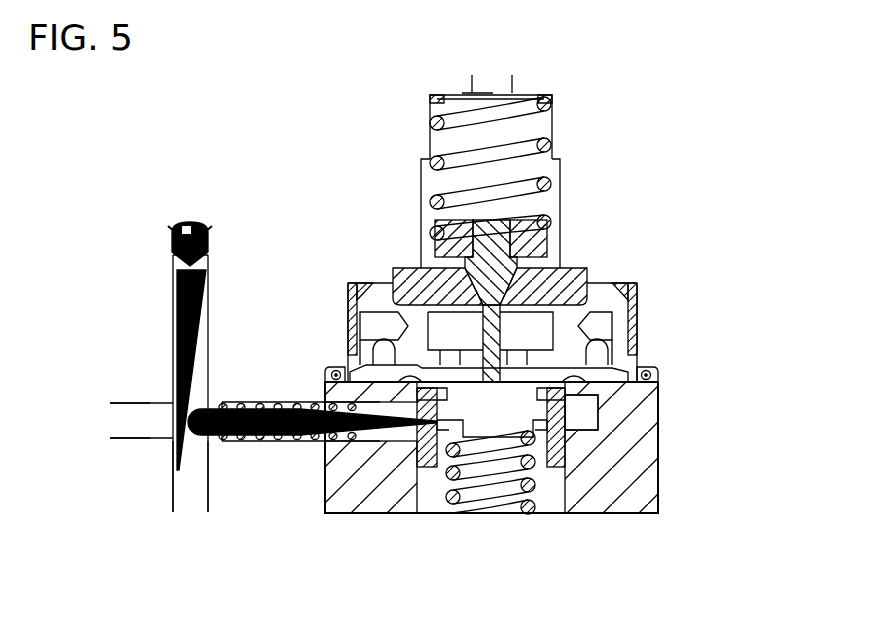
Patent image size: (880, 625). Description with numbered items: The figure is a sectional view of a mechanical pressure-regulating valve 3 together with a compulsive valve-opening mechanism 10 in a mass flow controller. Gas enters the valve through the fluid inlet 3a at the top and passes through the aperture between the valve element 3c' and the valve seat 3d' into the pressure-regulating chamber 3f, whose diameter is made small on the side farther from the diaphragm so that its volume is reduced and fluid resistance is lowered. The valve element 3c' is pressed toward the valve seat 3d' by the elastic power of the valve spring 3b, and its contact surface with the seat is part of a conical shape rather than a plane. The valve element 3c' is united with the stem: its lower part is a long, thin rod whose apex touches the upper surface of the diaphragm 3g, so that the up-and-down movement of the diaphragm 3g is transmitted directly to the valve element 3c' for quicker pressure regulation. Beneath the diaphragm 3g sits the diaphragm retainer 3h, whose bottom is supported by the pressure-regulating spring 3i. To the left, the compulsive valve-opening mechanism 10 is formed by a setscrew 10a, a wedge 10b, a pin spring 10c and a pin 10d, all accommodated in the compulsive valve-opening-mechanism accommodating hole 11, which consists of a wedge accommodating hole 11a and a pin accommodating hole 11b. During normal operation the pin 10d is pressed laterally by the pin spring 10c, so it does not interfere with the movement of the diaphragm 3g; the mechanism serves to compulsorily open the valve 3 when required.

The mechanical pressure-regulating valve 3 is at (628, 199).
The fluid inlet 3a is at (493, 92).
The valve spring 3b is at (517, 151).
The valve element 3c' is at (433, 301).
The valve seat 3d' is at (550, 274).
The pressure-regulating chamber 3f is at (533, 335).
The diaphragm 3g is at (562, 392).
The diaphragm retainer 3h is at (535, 405).
The pressure-regulating spring 3i is at (522, 490).
The compulsive valve-opening mechanism 10 is at (320, 172).
The setscrew 10a is at (185, 232).
The wedge 10b is at (173, 296).
The pin spring 10c is at (246, 402).
The pin 10d is at (312, 405).
The compulsive valve-opening-mechanism accommodating hole 11 is at (173, 565).
The wedge accommodating hole 11a is at (192, 503).
The pin accommodating hole 11b is at (123, 423).